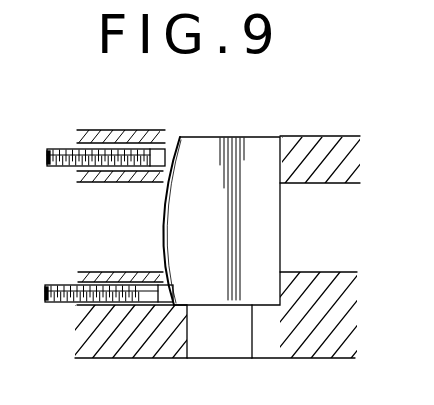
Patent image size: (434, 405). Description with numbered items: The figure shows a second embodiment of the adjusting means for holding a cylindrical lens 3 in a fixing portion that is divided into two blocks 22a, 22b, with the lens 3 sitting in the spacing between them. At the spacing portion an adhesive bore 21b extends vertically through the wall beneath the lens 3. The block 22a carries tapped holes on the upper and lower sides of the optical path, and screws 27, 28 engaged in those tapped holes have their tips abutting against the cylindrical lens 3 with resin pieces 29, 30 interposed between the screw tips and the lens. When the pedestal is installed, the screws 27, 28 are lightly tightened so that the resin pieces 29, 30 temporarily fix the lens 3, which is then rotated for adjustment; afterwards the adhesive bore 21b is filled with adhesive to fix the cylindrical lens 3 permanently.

The cylindrical lens 3 is at (257, 142).
The adhesive bore 21b is at (220, 345).
The block 22a is at (118, 134).
The block 22b is at (331, 140).
The screw 27 is at (51, 149).
The screw 28 is at (46, 287).
The resin piece 29 is at (166, 143).
The resin piece 30 is at (153, 275).